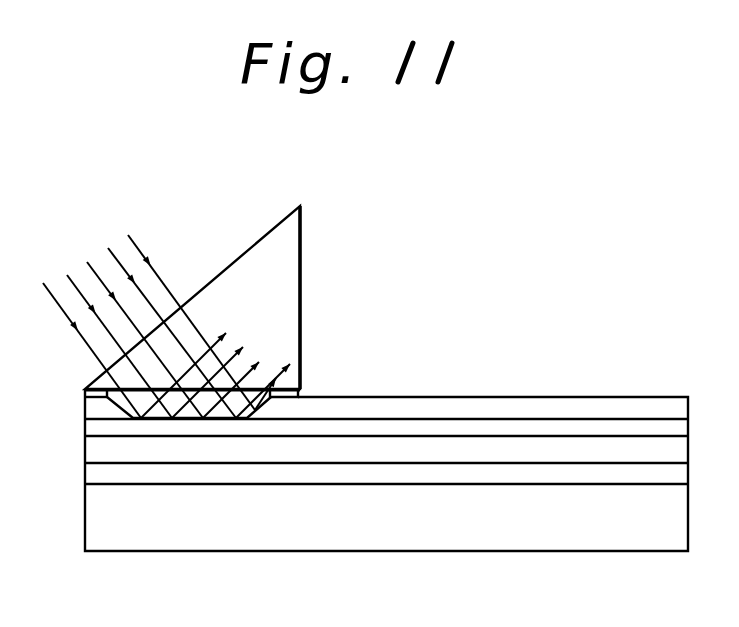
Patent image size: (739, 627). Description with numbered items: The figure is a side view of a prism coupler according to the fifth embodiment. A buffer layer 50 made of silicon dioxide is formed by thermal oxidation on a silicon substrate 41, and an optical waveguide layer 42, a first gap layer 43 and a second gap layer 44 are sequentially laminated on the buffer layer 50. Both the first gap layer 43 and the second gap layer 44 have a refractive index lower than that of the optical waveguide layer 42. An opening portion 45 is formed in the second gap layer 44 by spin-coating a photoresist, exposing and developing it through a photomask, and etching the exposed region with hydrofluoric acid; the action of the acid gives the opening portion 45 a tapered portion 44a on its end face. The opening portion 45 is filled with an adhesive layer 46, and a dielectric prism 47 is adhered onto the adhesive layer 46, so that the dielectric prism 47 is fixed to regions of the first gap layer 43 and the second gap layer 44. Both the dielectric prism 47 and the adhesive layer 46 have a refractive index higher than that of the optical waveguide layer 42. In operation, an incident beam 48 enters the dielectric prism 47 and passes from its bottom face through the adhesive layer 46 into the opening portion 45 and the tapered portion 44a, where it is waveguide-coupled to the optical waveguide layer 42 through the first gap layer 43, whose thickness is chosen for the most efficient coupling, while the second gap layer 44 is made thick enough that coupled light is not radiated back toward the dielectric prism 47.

The silicon substrate 41 is at (470, 527).
The optical waveguide layer 42 is at (600, 430).
The first gap layer 43 is at (515, 428).
The second gap layer 44 is at (443, 406).
The tapered portion 44a is at (118, 400).
The opening portion 45 is at (163, 414).
The adhesive layer 46 is at (228, 413).
The dielectric prism 47 is at (283, 258).
The incident beam 48 is at (150, 297).
The buffer layer 50 is at (560, 473).